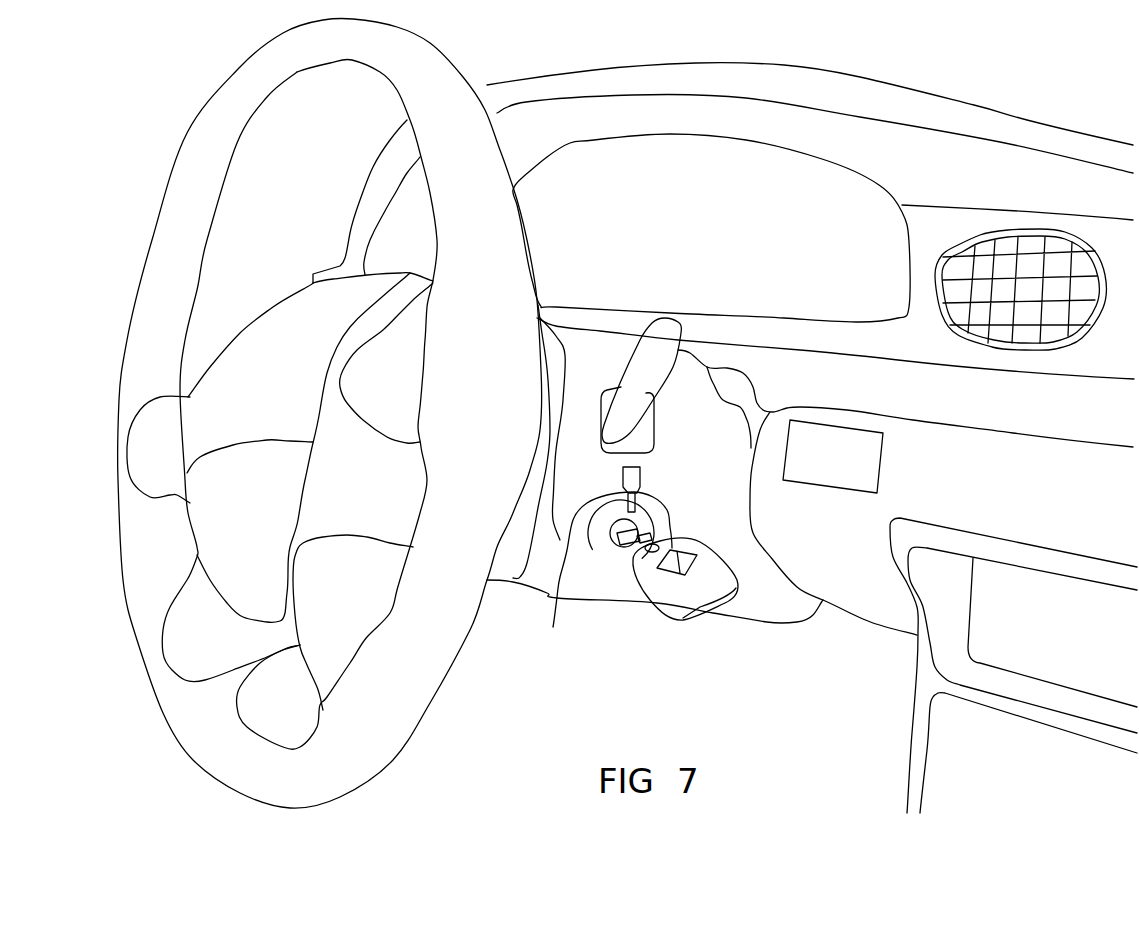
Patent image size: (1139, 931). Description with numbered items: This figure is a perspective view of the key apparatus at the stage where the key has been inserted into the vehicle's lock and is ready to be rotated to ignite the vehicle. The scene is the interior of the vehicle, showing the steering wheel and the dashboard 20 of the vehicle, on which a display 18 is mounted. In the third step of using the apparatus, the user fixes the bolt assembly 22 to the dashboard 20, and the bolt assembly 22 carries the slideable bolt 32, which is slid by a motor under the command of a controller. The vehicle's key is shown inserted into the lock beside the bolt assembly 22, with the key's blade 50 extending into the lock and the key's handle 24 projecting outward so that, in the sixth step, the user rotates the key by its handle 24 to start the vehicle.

The display 18 is at (878, 452).
The dashboard 20 is at (857, 597).
The bolt assembly 22 is at (641, 481).
The key's handle 24 is at (692, 590).
The slideable bolt 32 is at (634, 506).
The key's blade 50 is at (611, 545).